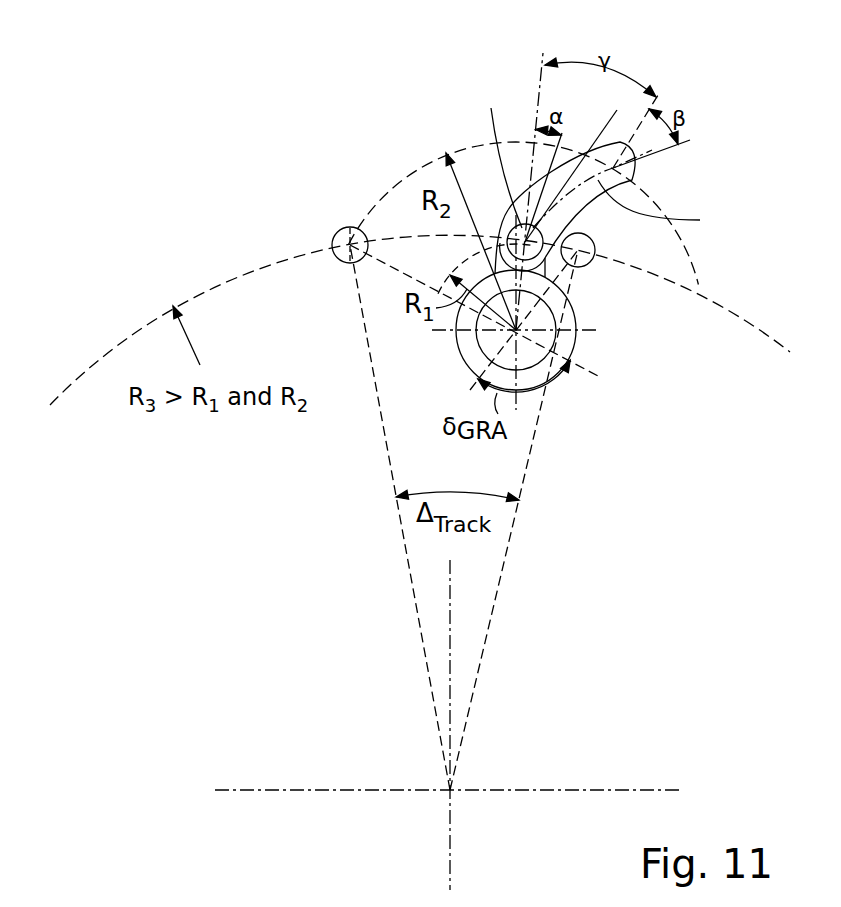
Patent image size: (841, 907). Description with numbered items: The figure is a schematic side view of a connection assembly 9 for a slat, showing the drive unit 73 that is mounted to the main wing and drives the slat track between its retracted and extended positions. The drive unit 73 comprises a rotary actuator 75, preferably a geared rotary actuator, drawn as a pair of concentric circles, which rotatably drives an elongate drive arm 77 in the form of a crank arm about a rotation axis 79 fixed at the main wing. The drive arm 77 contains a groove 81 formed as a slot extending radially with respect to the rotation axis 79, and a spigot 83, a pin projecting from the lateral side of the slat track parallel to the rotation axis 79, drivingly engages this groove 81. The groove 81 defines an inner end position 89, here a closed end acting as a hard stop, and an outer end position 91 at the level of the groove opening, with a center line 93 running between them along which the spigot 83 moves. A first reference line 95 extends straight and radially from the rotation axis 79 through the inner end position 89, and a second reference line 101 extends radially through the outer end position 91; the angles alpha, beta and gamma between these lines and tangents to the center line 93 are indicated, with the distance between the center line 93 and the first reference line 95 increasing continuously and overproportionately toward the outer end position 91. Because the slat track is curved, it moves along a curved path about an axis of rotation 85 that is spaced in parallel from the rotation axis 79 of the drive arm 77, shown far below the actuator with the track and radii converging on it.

The connection assembly 9 is at (549, 457).
The drive unit 73 is at (587, 343).
The rotary actuator 75 is at (472, 352).
The drive arm 77 is at (497, 153).
The rotation axis 79 is at (552, 375).
The groove 81 is at (578, 163).
The spigot 83 is at (562, 268).
The axis of rotation 85 is at (448, 795).
The inner end position 89 is at (509, 230).
The outer end position 91 is at (615, 170).
The center line 93 is at (667, 209).
The first reference line 95 is at (540, 93).
The second reference line 101 is at (658, 93).